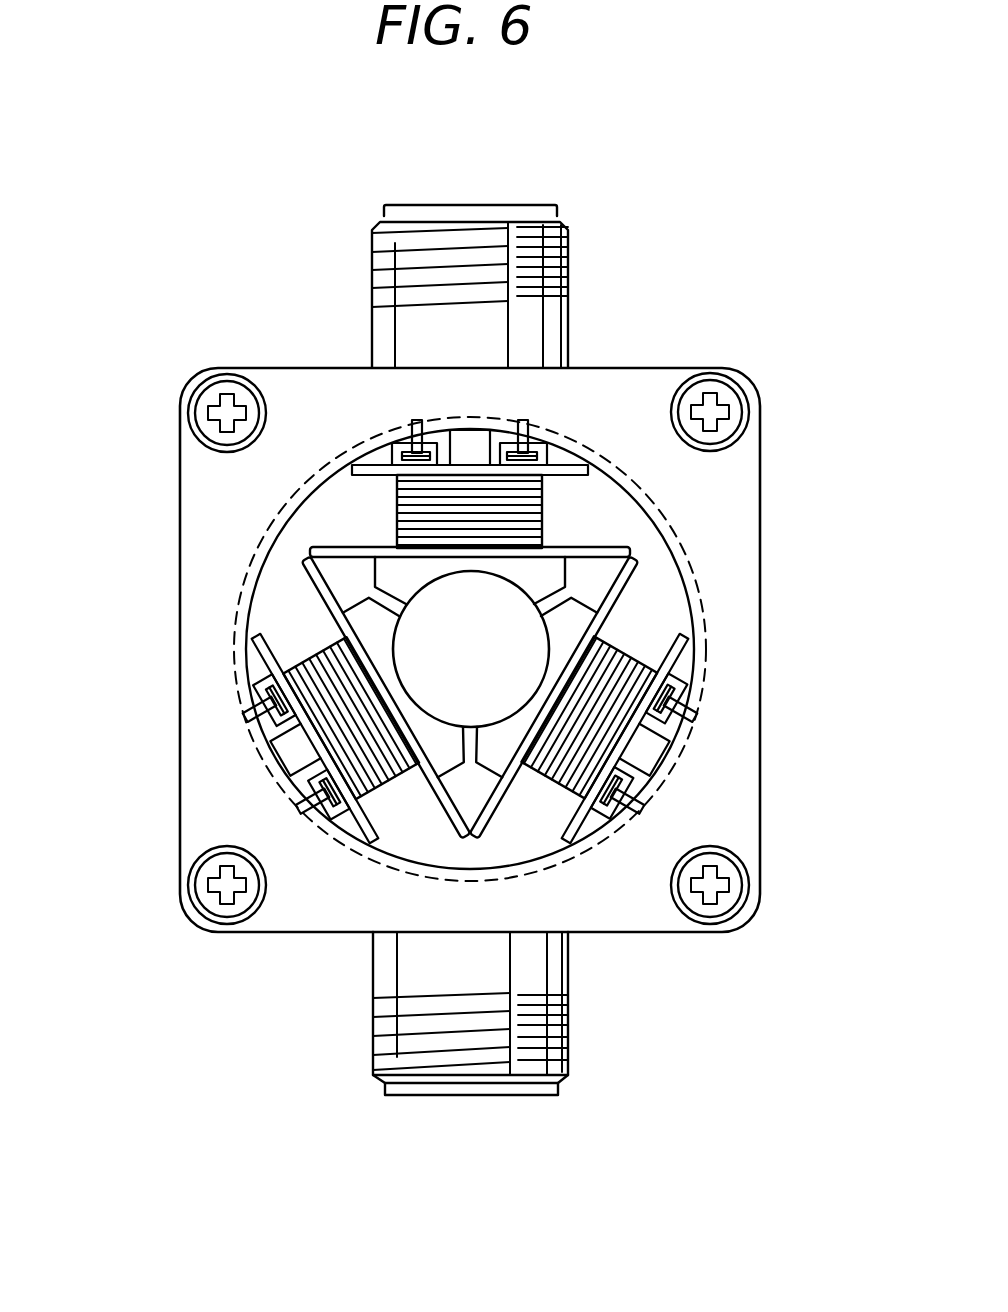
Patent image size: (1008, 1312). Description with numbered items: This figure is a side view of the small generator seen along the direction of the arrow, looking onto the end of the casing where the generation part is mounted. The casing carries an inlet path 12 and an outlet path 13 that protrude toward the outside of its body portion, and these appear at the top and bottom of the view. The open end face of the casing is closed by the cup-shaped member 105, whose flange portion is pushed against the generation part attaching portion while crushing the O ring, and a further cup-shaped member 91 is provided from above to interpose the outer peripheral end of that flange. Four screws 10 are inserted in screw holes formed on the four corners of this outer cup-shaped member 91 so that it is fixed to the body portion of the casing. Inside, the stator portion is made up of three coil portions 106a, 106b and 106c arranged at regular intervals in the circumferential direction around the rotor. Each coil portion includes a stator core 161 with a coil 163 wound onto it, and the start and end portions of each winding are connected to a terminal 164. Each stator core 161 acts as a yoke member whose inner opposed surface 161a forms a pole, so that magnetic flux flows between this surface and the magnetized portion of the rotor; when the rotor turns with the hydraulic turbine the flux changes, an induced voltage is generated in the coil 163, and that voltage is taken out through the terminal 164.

The screw 10 is at (221, 406).
The inlet path 12 is at (497, 237).
The outlet path 13 is at (480, 1060).
The case / housing (frame 90) 91 is at (650, 381).
The cup-shaped member 105 is at (525, 645).
The coil portion 106a is at (407, 517).
The coil portion 106b is at (585, 745).
The coil portion 106c is at (386, 768).
The stator core 161 is at (636, 557).
The inner opposed surface 161a is at (480, 796).
The coil 163 is at (655, 648).
The terminal 164 is at (418, 420).